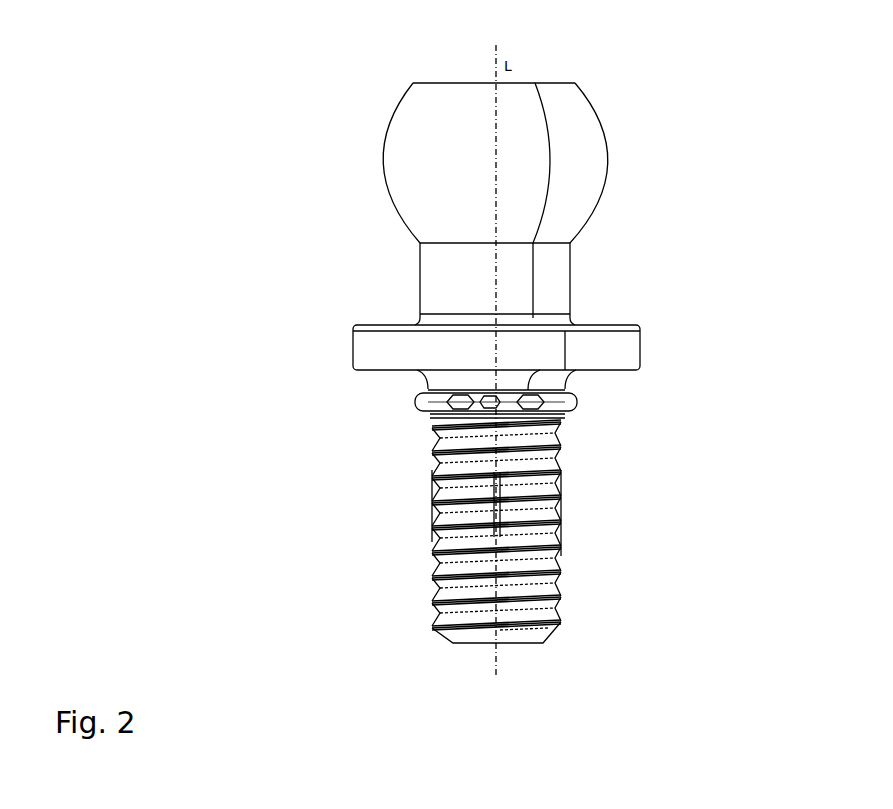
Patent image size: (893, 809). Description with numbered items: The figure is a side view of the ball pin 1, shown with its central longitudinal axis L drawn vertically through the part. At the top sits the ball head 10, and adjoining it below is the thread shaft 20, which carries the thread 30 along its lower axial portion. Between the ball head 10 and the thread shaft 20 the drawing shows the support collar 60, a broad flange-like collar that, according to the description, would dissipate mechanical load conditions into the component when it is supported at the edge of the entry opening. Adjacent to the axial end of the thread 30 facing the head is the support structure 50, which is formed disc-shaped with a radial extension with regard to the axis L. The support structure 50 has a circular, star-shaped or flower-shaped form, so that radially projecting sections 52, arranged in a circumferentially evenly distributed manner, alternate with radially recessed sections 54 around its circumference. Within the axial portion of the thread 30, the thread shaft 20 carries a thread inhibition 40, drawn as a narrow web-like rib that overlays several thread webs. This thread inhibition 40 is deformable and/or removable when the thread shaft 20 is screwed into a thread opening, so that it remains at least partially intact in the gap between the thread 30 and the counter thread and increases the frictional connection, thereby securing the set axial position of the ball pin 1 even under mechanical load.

The ball pin 1 is at (606, 90).
The ball head 10 is at (607, 153).
The thread shaft 20 is at (563, 555).
The thread 30 is at (563, 485).
The thread inhibition 40 is at (432, 484).
The support structure 50 is at (521, 419).
The radially projecting sections 52 is at (562, 387).
The radially recessed sections 54 is at (440, 410).
The support collar 60 is at (368, 348).